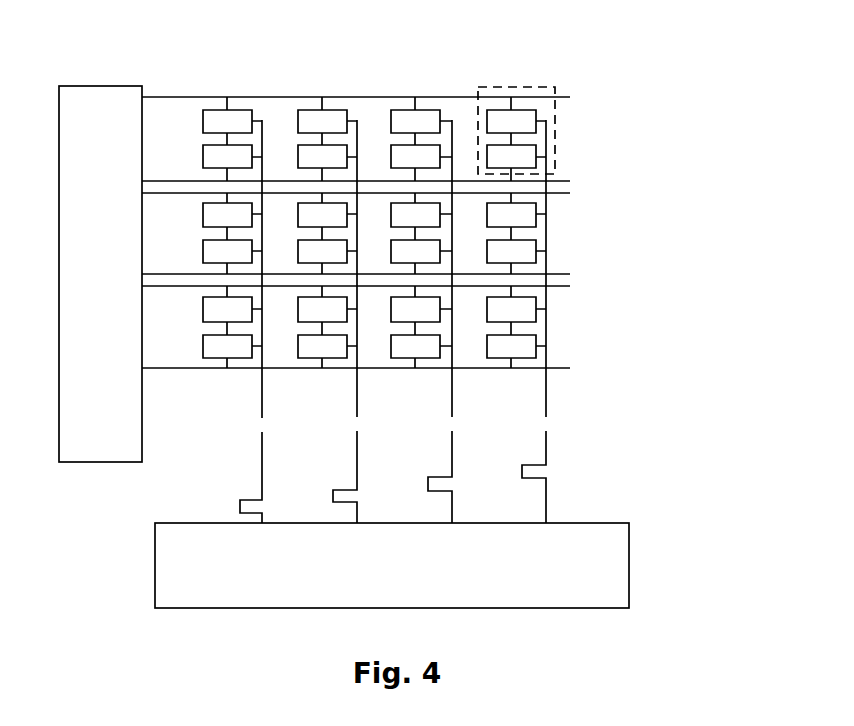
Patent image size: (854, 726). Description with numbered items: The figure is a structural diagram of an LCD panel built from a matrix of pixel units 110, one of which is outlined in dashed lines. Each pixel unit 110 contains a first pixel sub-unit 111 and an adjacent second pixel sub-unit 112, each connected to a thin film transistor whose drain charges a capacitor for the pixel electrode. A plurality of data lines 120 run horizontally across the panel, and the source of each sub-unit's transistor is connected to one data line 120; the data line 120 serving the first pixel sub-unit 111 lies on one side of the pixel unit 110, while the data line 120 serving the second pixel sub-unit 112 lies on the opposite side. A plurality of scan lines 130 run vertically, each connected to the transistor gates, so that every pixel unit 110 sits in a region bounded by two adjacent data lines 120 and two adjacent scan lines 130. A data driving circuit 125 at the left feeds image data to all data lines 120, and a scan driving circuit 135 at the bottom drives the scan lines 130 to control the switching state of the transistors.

The pixel unit 110 is at (548, 87).
The first pixel sub-unit 111 is at (512, 122).
The second pixel sub-unit 112 is at (512, 157).
The data line 120 is at (177, 97).
The data driving circuit 125 is at (85, 105).
The scan line 130 is at (546, 399).
The scan driving circuit 135 is at (613, 570).